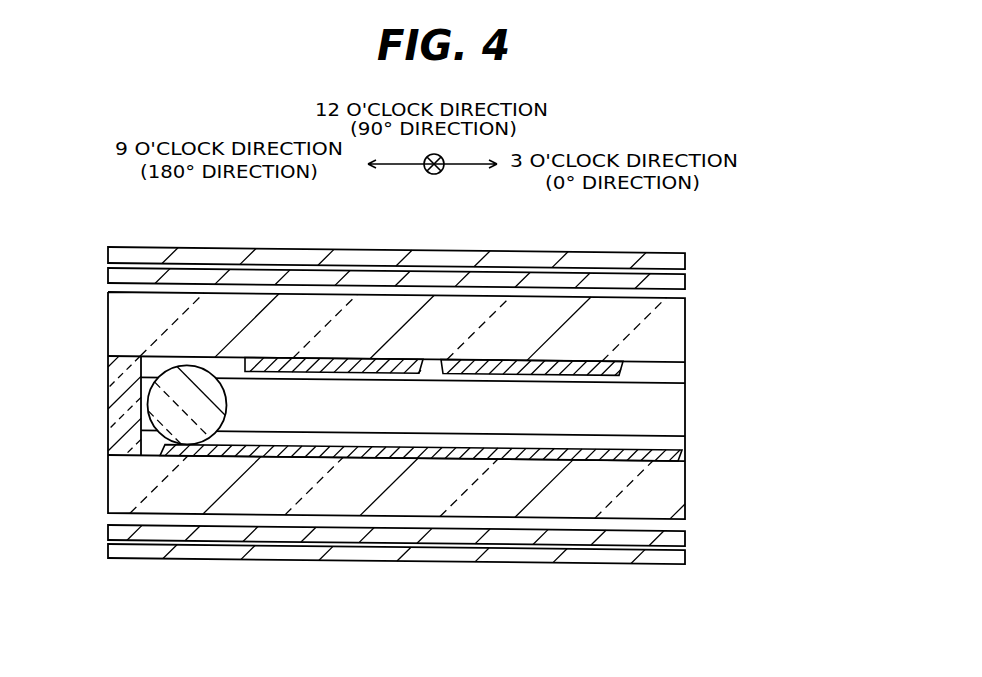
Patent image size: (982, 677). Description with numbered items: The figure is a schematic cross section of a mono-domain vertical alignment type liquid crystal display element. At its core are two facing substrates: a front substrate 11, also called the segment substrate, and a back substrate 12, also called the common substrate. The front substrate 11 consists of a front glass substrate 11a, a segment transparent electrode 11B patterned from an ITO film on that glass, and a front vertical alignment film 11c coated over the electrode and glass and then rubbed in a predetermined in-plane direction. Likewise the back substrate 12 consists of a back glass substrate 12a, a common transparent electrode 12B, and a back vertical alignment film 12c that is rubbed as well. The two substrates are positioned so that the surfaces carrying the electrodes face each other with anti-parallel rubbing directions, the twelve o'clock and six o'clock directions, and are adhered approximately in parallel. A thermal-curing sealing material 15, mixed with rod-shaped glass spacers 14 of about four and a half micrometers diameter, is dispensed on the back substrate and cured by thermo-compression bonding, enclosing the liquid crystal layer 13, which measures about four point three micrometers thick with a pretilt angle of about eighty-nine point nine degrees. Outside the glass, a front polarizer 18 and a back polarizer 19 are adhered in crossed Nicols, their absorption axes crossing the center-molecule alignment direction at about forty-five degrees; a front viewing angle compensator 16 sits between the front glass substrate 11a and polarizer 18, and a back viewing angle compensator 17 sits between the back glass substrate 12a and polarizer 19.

The front substrate 11 is at (458, 355).
The front glass substrate 11a is at (677, 334).
The segment transparent electrode 11B is at (623, 373).
The front vertical alignment film 11c is at (677, 383).
The back substrate 12 is at (458, 451).
The back glass substrate 12a is at (677, 503).
The common transparent electrode 12B is at (678, 460).
The back vertical alignment film 12c is at (677, 441).
The liquid crystal layer 13 is at (677, 427).
The rod-shaped glass spacer 14 is at (150, 425).
The sealing material 15 is at (108, 370).
The front viewing angle compensator 16 is at (683, 281).
The back viewing angle compensator 17 is at (683, 540).
The front polarizer 18 is at (683, 261).
The back polarizer 19 is at (683, 559).